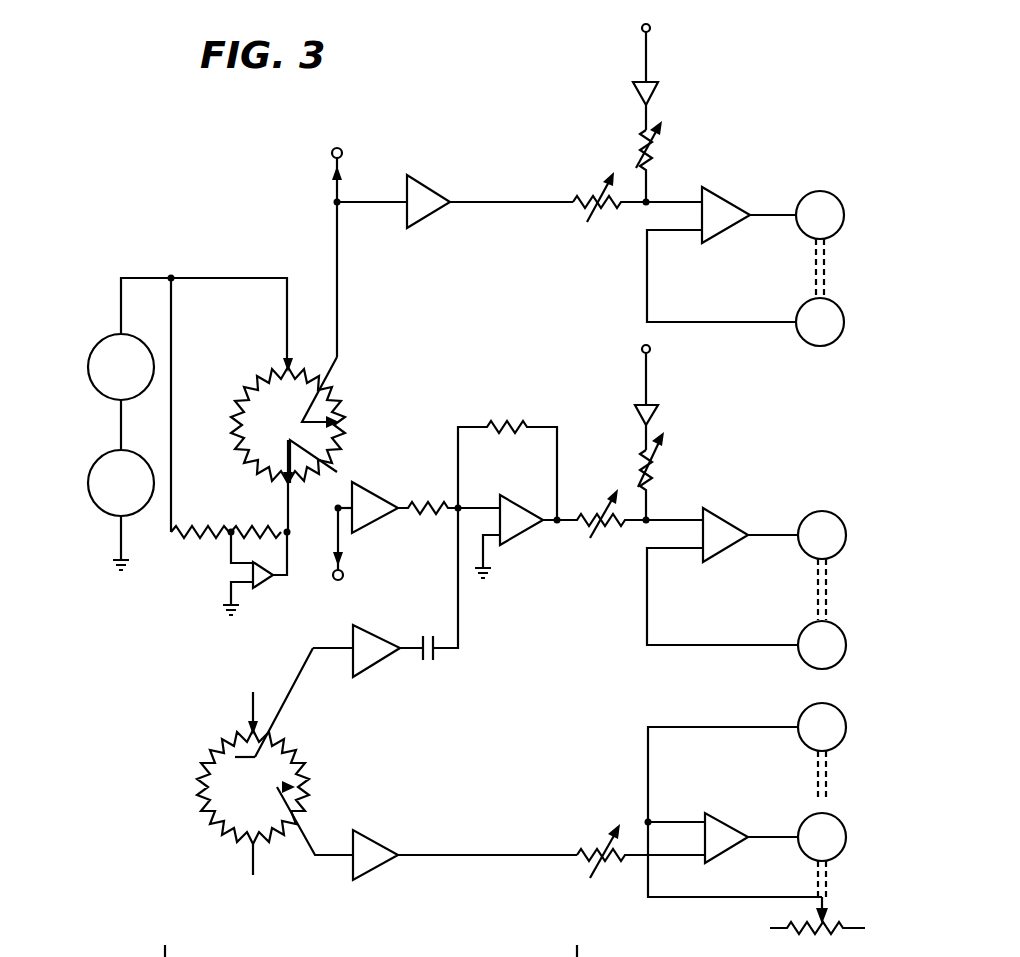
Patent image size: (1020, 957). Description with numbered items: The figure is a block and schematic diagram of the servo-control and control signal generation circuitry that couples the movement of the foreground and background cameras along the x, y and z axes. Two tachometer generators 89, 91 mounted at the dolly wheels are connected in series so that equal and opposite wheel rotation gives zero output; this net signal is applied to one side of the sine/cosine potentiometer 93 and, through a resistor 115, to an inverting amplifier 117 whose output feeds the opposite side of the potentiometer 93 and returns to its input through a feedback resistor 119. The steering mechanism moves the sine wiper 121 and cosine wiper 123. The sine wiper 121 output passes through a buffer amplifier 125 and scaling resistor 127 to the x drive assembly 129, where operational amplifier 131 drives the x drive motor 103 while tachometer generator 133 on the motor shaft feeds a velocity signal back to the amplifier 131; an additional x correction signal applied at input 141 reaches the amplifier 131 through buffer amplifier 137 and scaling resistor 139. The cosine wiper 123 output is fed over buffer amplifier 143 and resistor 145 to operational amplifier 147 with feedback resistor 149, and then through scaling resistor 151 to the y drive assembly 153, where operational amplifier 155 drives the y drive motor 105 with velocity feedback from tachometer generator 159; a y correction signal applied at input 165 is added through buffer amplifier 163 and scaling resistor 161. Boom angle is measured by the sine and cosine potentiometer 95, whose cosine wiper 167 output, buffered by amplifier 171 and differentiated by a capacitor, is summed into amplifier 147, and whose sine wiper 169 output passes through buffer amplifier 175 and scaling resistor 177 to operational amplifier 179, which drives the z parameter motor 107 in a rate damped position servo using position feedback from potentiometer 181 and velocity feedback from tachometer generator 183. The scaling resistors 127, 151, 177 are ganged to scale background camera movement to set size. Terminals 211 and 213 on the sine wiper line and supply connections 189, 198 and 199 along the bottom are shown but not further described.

The temperature sensor T 89 is at (105, 342).
The tachometer generator 91 is at (103, 458).
The sine/cosine potentiometer 93 is at (282, 355).
The sine and cosine potentiometer 95 is at (230, 740).
The x drive motor 103 is at (839, 200).
The y drive motor 105 is at (842, 521).
The z parameter motor 107 is at (843, 818).
The resistor 115 is at (208, 541).
The inverting amplifier 117 is at (260, 588).
The feedback resistor 119 is at (266, 526).
The sine wiper 121 is at (322, 412).
The cosine wiper 123 is at (262, 453).
The buffer amplifier 125 is at (428, 216).
The scaling resistor 127 is at (576, 196).
The x drive assembly 129 is at (739, 178).
The operational amplifier 131 is at (720, 240).
The tachometer generator 133 is at (839, 302).
The buffer amplifier 137 is at (632, 82).
The scaling resistor 139 is at (655, 157).
The input 141 is at (652, 30).
The buffer amplifier 143 is at (368, 488).
The resistor 145 is at (432, 522).
The operational amplifier 147 is at (520, 539).
The feedback resistor 149 is at (520, 424).
The scaling resistor 151 is at (606, 534).
The y drive assembly 153 is at (822, 494).
The operational amplifier 155 is at (727, 512).
The tachometer generator 159 is at (842, 633).
The scaling resistor 161 is at (660, 470).
The buffer amplifier 163 is at (636, 410).
The input 165 is at (641, 347).
The cosine wiper 167 is at (235, 758).
The sine wiper 169 is at (300, 778).
The buffer amplifier 171 is at (364, 678).
The unity gain amplifier 175 is at (372, 830).
The scaling resistor 177 is at (598, 844).
The operational amplifier 179 is at (724, 815).
The potentiometer 181 is at (848, 924).
The tachometer generator 183 is at (808, 705).
The supply terminal 189 is at (248, 956).
The supply terminal 198 is at (604, 956).
The supply terminal 199 is at (660, 956).
The output terminal 211 is at (338, 148).
The output terminal 213 is at (344, 580).